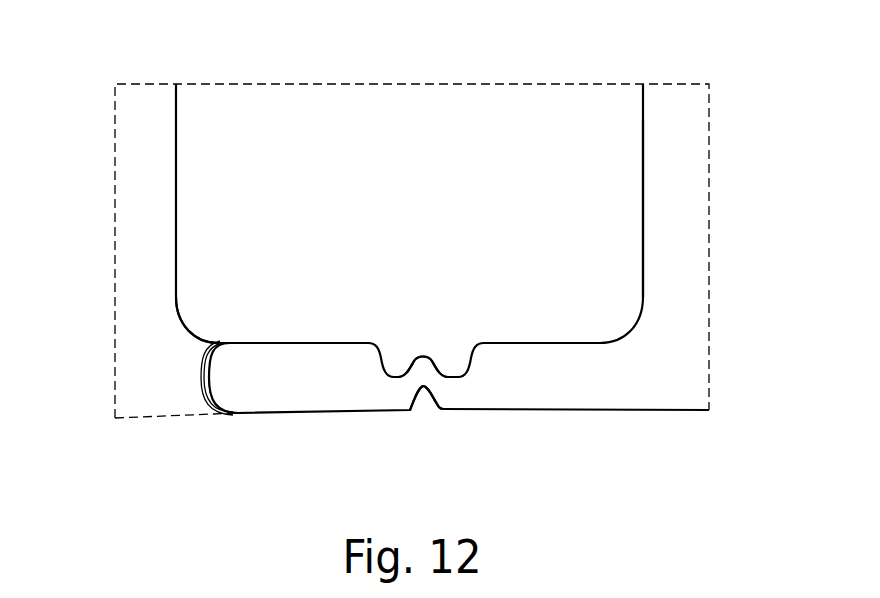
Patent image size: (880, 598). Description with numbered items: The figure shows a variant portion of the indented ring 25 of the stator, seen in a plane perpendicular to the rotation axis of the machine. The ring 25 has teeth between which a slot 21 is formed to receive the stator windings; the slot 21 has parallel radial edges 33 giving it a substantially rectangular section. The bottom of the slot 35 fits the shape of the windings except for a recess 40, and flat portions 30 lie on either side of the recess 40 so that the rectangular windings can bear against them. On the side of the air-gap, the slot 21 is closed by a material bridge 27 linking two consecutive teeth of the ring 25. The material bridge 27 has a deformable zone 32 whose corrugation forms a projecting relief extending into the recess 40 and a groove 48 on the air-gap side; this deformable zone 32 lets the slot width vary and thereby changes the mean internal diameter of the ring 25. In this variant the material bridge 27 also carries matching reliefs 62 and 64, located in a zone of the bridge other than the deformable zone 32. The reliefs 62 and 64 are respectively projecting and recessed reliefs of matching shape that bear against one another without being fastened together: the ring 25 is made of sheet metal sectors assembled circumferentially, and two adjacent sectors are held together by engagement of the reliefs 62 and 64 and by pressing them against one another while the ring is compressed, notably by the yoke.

The slot 21 is at (522, 105).
The indented ring 25 is at (682, 125).
The radial edge 33 is at (643, 190).
The flat portion 30 is at (275, 342).
The material bridge 27 is at (572, 398).
The bottom of the slot 35 is at (602, 343).
The recess 40 is at (452, 357).
The groove 48 is at (423, 392).
The deformable zone 32 is at (437, 403).
The matching relief 62 is at (215, 412).
The matching relief 64 is at (250, 400).